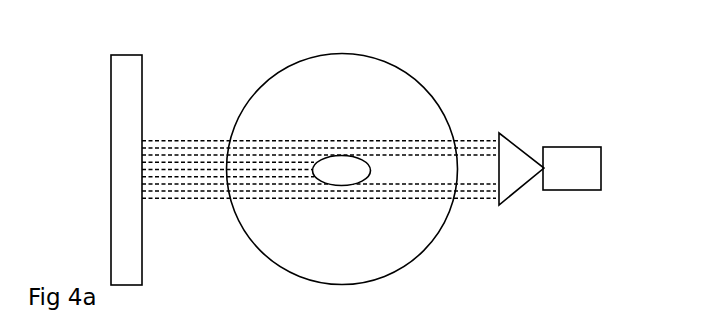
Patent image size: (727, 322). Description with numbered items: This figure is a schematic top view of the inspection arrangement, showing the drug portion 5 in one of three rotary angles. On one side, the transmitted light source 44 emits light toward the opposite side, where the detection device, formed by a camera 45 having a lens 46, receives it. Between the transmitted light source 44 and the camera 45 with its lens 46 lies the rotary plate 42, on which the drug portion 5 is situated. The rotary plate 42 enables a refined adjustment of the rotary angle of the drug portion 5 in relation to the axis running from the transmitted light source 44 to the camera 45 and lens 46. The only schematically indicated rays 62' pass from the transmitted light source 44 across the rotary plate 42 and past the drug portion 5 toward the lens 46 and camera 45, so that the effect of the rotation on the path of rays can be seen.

The transmitted light source 44 is at (127, 83).
The rays 62' is at (319, 225).
The rotary plate 42 is at (412, 112).
The drug portion 5 is at (342, 168).
The lens 46 is at (522, 170).
The camera 45 is at (572, 169).